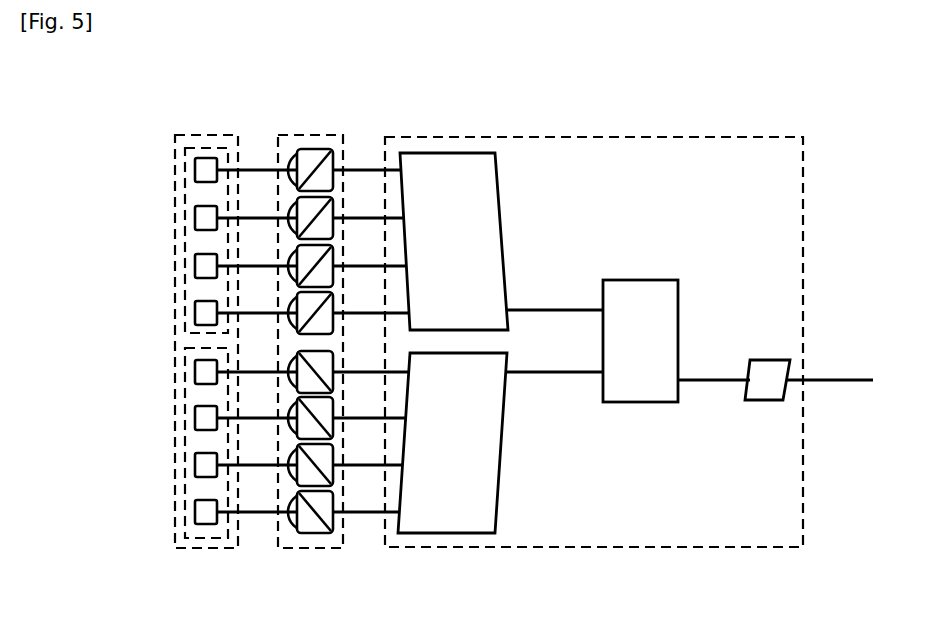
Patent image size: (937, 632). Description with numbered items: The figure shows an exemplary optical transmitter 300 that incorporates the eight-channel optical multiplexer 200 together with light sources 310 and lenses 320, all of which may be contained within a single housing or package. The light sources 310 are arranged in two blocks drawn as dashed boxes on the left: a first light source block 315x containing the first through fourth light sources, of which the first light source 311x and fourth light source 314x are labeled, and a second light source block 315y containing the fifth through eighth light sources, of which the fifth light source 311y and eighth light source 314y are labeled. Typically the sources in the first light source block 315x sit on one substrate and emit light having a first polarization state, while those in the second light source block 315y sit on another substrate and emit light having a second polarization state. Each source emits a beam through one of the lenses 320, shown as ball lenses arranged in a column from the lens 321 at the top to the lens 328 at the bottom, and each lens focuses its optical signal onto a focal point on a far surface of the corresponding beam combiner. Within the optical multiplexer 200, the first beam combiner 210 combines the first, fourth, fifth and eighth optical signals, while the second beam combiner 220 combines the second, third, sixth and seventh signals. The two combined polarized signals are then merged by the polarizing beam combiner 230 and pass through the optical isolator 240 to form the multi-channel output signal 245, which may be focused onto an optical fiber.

The optical transmitter 300 is at (600, 88).
The light sources 310 is at (246, 140).
The first light source block 315x is at (203, 145).
The second light source block 315y is at (212, 542).
The first light source 311x is at (196, 181).
The fourth light source 314x is at (196, 311).
The fifth light source 311y is at (196, 377).
The eighth light source 314y is at (196, 512).
The lenses 320 is at (353, 140).
The lens 321 is at (318, 147).
The lens 328 is at (315, 530).
The optical multiplexer 200 is at (773, 181).
The first beam combiner 210 is at (448, 152).
The second beam combiner 220 is at (452, 533).
The polarizing beam combiner 230 is at (643, 280).
The optical isolator 240 is at (763, 402).
The multi-channel output signal 245 is at (827, 382).